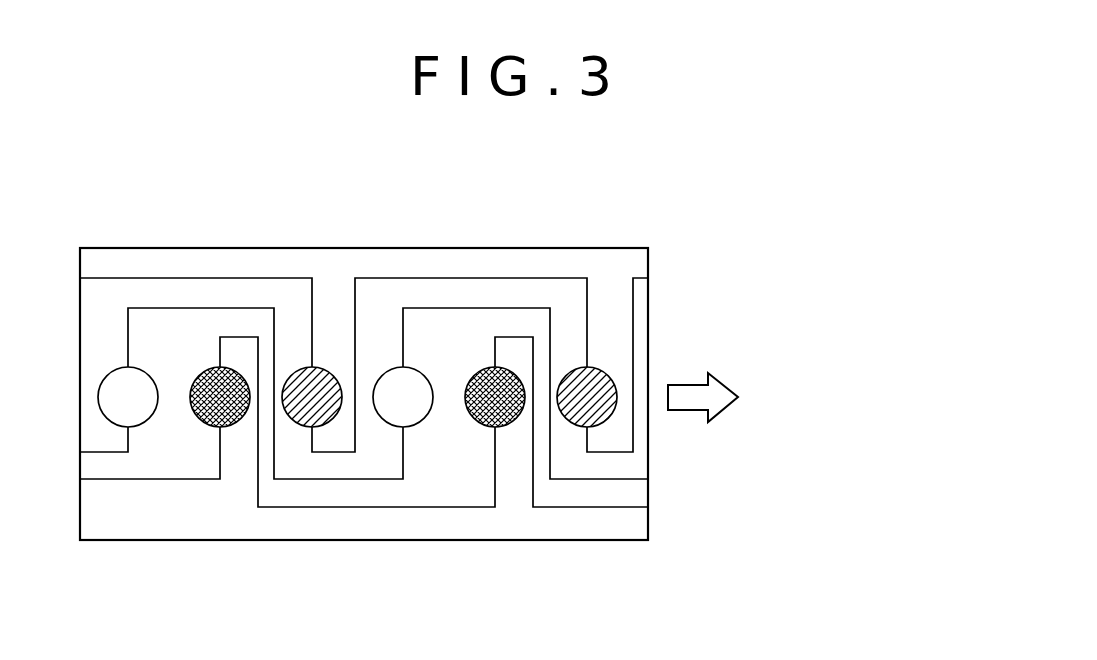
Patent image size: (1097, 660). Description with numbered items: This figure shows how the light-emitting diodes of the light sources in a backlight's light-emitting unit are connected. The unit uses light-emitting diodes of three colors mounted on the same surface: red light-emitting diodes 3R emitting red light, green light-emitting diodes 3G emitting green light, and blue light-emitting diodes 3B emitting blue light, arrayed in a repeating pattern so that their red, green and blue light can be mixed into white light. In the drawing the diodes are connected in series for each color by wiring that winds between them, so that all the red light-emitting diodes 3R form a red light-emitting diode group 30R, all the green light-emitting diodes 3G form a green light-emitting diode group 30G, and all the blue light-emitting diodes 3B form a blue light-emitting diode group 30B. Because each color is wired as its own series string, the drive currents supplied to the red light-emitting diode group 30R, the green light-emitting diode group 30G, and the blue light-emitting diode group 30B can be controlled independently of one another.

The red light-emitting diode 3R is at (150, 405).
The green light-emitting diode 3G is at (237, 422).
The blue light-emitting diode 3B is at (324, 378).
The red light-emitting diode group 30R is at (811, 397).
The green light-emitting diode group 30G is at (811, 397).
The blue light-emitting diode group 30B is at (811, 397).